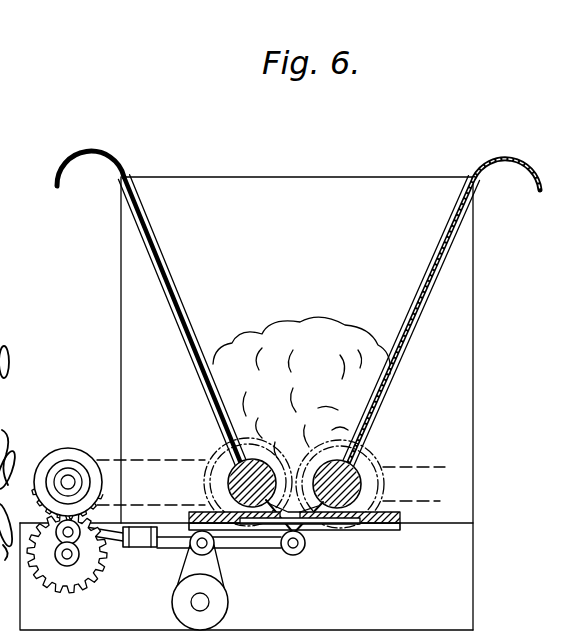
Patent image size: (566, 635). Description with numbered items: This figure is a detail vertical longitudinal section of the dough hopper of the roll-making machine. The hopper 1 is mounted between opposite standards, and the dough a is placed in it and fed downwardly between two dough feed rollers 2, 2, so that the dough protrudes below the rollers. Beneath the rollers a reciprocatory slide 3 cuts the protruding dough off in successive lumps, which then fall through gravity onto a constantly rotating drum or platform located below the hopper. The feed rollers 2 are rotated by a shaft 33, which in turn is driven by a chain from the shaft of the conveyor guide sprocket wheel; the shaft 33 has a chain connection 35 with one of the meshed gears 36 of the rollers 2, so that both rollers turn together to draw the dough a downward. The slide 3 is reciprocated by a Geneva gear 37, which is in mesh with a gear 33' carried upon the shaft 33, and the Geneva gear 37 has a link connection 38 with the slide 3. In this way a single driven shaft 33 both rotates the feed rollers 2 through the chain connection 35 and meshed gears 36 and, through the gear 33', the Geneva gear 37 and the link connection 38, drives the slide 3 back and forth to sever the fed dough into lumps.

The hopper 1 is at (342, 186).
The dough a is at (317, 336).
The dough feed rollers 2 is at (238, 475).
The reciprocatory slide 3 is at (296, 550).
The shaft 33 is at (69, 466).
The gear 33' is at (65, 469).
The chain connection 35 is at (130, 462).
The meshed gears 36 is at (372, 514).
The Geneva gear 37 is at (96, 553).
The link connection 38 is at (178, 540).